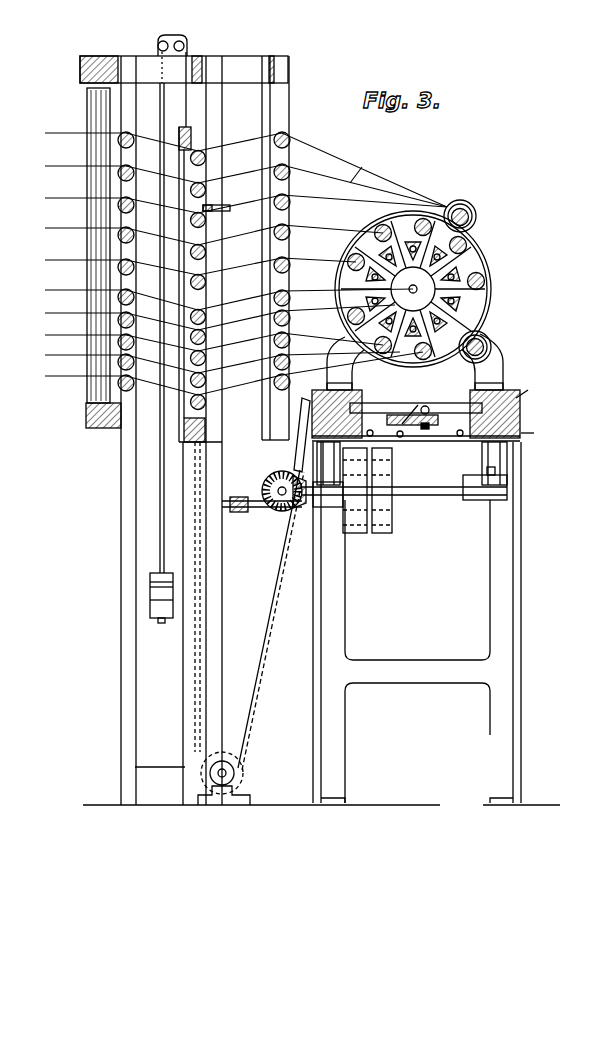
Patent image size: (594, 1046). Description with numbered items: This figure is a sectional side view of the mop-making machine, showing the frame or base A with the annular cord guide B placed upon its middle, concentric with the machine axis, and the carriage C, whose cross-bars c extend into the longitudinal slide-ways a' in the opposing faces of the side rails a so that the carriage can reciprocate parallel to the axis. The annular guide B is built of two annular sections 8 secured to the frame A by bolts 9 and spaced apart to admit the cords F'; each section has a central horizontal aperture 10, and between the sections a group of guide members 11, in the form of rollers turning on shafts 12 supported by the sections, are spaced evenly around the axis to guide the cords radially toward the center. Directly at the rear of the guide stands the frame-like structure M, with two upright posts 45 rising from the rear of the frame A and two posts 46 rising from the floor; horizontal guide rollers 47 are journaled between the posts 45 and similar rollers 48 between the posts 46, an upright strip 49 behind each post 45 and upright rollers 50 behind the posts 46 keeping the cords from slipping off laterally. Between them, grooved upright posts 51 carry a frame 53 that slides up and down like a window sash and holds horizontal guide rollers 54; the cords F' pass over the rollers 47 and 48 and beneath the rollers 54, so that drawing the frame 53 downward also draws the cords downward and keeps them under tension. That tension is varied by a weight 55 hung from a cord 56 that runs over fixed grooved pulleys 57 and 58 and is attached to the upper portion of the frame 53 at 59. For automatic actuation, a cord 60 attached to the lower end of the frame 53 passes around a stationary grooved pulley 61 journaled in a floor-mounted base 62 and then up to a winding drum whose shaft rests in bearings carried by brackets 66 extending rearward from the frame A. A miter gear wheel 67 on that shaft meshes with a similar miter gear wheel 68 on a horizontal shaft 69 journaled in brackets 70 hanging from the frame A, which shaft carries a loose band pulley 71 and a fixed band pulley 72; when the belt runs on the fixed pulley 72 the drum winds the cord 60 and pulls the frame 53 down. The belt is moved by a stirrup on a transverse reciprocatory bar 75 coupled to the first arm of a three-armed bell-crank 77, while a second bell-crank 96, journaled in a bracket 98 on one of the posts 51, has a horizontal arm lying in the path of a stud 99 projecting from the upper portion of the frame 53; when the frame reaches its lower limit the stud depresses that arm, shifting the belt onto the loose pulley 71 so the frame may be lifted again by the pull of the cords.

The annular sections 8 is at (477, 222).
The bolts 9 is at (338, 387).
The central horizontal aperture 10 is at (420, 290).
The guide members 11 is at (468, 246).
The shafts 12 is at (470, 268).
The upright posts 45 is at (290, 123).
The posts 46 is at (121, 455).
The horizontal guide rollers 47 is at (291, 210).
The horizontal guide rollers 48 is at (132, 302).
The upright strip 49 is at (270, 162).
The upright rollers 50 is at (90, 272).
The upright posts 51 is at (222, 583).
The frame 53 is at (205, 428).
The horizontal guide rollers 54 is at (206, 263).
The weight 55 is at (158, 621).
The cord 56 is at (163, 526).
The grooved pulley 57 is at (158, 45).
The grooved pulley 58 is at (188, 45).
The attachment point 59 is at (191, 133).
The cord 60 is at (267, 644).
The stationary grooved pulley 61 is at (234, 771).
The base 62 is at (228, 786).
The brackets 66 is at (299, 454).
The miter gear wheel 67 is at (274, 507).
The miter gear wheel 68 is at (288, 546).
The horizontal shaft 69 is at (398, 496).
The brackets 70 is at (508, 489).
The loose band pulley 71 is at (390, 534).
The fixed band pulley 72 is at (352, 534).
The reciprocatory bar 75 is at (405, 442).
The bell-crank 77 is at (427, 438).
The bell-crank 96 is at (258, 501).
The bracket 98 is at (246, 512).
The stud 99 is at (222, 206).
The frame-like structure M is at (64, 106).
The cords F' is at (246, 264).
The annular cord guide B is at (515, 314).
The frame A is at (426, 594).
The carriage C is at (416, 404).
The cross-bars c is at (474, 409).
The side rails a is at (533, 434).
The slide-ways a' is at (530, 388).